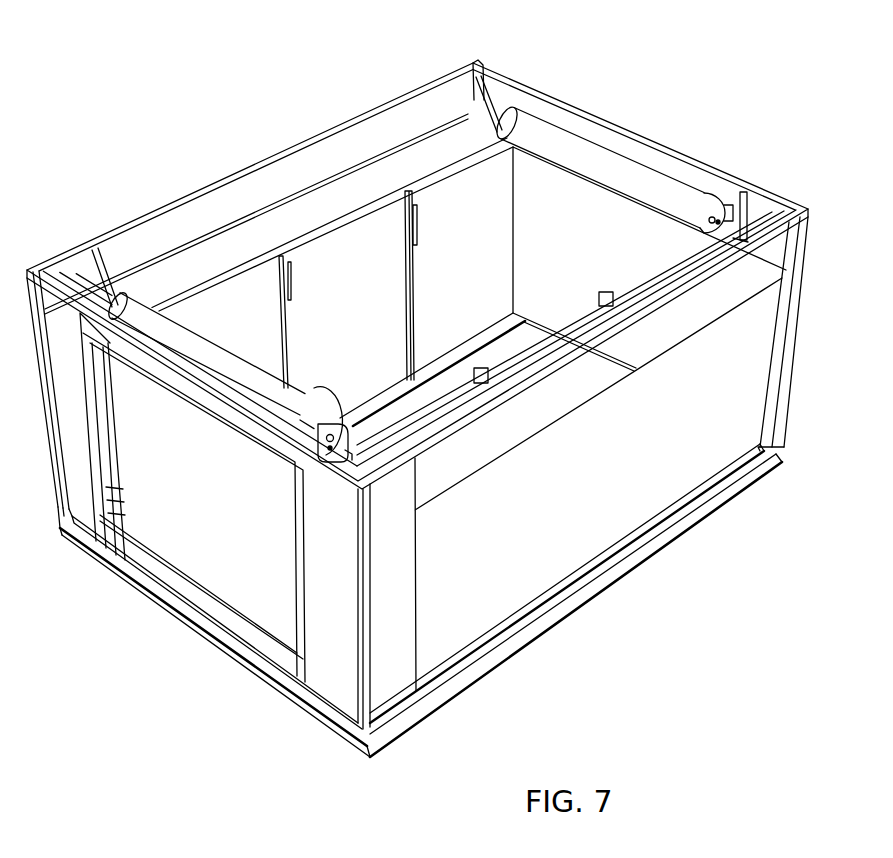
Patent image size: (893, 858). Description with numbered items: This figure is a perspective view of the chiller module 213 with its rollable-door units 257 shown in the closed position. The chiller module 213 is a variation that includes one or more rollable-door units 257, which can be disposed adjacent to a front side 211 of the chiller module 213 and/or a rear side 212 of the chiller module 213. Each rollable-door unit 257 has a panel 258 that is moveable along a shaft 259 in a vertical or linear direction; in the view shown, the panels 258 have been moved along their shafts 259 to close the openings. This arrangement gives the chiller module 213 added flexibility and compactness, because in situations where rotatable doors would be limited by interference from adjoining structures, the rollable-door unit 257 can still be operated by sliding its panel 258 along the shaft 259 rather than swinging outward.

The front side 211 is at (71, 565).
The rear side 212 is at (730, 154).
The chiller module 213 is at (275, 727).
The rollable-door unit 257 is at (511, 94).
The panel 258 is at (598, 226).
The shaft 259 is at (533, 130).